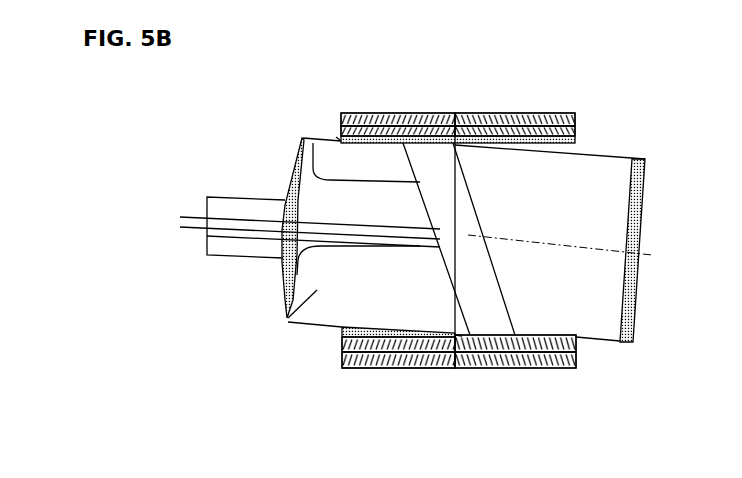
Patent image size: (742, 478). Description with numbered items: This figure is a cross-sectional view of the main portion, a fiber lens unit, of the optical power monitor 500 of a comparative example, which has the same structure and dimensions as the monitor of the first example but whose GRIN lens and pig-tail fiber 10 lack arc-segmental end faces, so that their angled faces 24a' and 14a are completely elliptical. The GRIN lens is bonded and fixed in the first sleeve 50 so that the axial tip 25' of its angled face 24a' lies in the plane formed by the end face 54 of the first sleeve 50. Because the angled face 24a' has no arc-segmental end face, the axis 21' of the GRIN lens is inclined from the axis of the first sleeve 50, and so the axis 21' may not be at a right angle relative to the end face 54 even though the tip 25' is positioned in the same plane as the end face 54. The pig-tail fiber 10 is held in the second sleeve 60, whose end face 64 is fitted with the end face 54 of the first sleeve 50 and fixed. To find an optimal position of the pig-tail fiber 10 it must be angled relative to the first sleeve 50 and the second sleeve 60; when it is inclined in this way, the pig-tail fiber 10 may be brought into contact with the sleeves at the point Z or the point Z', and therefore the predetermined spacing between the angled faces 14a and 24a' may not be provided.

The optical power monitor 500 is at (221, 134).
The pig-tail fiber 10 is at (288, 325).
The angled face 14a is at (303, 140).
The contact point Z' is at (324, 108).
The end face of the second sleeve 64 is at (445, 134).
The end face of the first sleeve 54 is at (447, 137).
The axial tip of the angled face 25' is at (465, 205).
The angled face 24a' is at (550, 119).
The axis of the GRIN lens 21' is at (648, 250).
The contact point Z is at (442, 375).
The second sleeve 60 is at (383, 357).
The first sleeve 50 is at (517, 353).